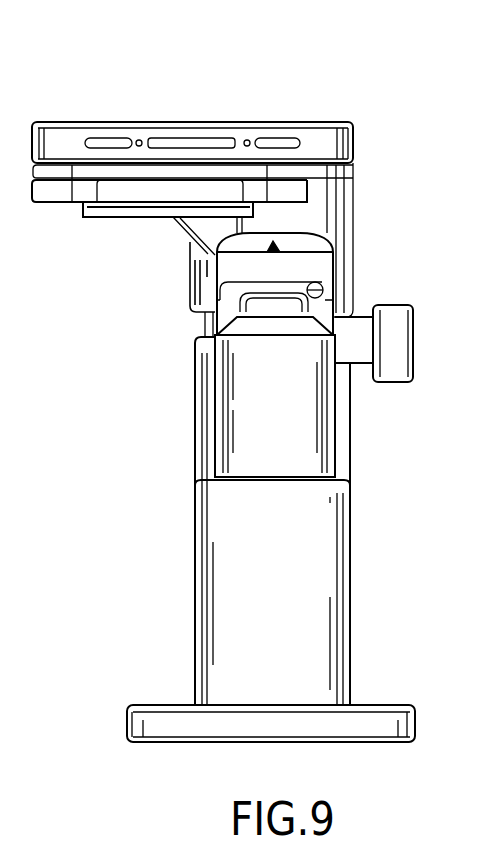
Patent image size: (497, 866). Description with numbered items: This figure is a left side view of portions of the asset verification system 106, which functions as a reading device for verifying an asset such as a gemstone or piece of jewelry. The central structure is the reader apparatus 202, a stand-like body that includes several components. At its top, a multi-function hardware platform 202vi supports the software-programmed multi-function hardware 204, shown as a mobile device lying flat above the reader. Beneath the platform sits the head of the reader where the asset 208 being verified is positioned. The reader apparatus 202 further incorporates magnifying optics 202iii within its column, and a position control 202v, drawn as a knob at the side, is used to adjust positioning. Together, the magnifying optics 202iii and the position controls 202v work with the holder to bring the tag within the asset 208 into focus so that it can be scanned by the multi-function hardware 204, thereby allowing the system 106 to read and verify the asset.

The asset verification system 106 is at (143, 72).
The multi-function hardware 204 is at (268, 122).
The multi-function hardware platform 202vi is at (48, 203).
The asset 208 is at (277, 238).
The position controls 202v is at (394, 312).
The magnifying optics 202iii is at (285, 428).
The reader apparatus 202 is at (295, 614).